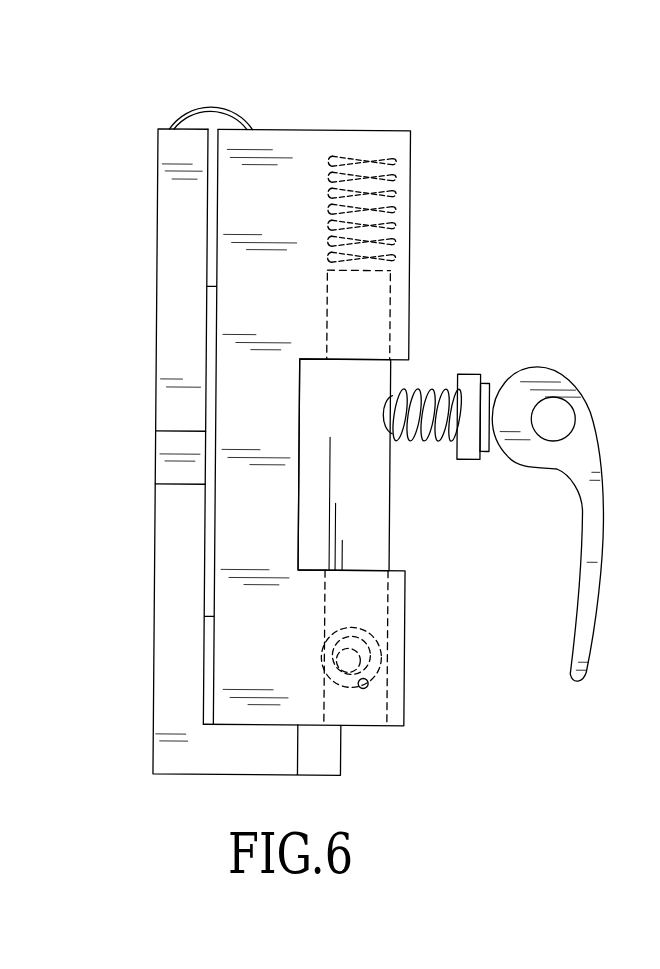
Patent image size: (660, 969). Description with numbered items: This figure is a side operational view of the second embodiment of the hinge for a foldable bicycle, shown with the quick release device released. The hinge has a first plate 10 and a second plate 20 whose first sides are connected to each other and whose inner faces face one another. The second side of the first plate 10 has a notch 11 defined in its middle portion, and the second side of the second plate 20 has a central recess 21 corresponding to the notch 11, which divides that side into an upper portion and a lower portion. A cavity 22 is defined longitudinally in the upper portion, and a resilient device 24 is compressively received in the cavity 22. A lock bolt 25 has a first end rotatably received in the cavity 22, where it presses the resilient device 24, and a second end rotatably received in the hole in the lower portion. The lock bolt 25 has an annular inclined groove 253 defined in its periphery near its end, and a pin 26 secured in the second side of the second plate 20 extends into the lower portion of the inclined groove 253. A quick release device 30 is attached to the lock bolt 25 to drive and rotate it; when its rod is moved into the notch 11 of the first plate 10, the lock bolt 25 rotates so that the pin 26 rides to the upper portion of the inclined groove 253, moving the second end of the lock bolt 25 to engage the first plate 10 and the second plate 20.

The first plate 10 is at (167, 350).
The notch 11 is at (163, 472).
The second plate 20 is at (285, 163).
The central recess 21 is at (312, 552).
The cavity 22 is at (347, 153).
The resilient device 24 is at (392, 210).
The lock bolt 25 is at (390, 468).
The annular inclined groove 253 is at (383, 622).
The pin 26 is at (369, 686).
The quick release device 30 is at (500, 366).